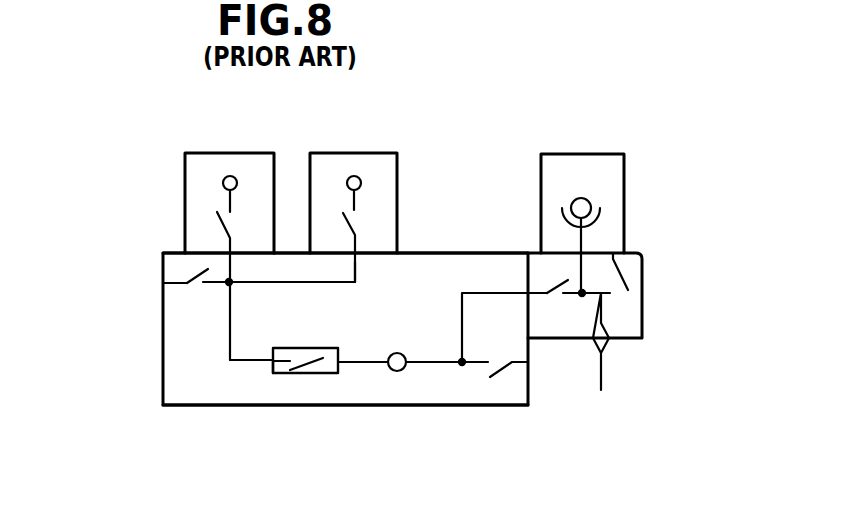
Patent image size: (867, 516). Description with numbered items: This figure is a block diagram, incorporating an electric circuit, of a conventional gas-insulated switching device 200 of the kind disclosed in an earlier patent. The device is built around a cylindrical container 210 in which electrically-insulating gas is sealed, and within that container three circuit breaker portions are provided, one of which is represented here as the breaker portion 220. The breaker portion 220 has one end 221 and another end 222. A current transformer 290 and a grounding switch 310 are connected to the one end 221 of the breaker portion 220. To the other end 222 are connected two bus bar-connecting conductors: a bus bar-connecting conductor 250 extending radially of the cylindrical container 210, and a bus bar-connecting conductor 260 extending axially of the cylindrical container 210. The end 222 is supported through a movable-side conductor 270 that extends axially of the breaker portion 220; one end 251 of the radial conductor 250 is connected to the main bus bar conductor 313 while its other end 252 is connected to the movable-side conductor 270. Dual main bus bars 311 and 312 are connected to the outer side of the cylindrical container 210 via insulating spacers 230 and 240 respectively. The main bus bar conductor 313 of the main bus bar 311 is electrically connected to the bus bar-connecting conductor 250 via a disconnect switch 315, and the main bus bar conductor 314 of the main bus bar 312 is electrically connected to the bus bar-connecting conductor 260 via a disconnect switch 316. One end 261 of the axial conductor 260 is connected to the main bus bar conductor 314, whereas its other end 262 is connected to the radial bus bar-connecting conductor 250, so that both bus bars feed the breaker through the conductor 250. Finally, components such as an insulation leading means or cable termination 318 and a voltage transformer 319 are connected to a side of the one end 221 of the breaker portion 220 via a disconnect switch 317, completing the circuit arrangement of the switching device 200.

The gas-insulated switching device 200 is at (143, 397).
The cylindrical container 210 is at (177, 407).
The circuit breaker portion 220 is at (317, 376).
The one end of the breaker portion 221 is at (337, 347).
The other end of the breaker portion 222 is at (276, 374).
The insulating spacer 230 is at (205, 249).
The insulating spacer 240 is at (375, 251).
The bus bar-connecting conductor 250 is at (227, 322).
The one end of the bus bar-connecting conductor 251 is at (227, 265).
The other end of the bus bar-connecting conductor 252 is at (227, 343).
The bus bar-connecting conductor 260 is at (292, 282).
The one end of the bus bar-connecting conductor 261 is at (352, 282).
The other end of the bus bar-connecting conductor 262 is at (232, 283).
The movable-side conductor 270 is at (262, 362).
The current transformer 290 is at (397, 372).
The grounding switch 310 is at (493, 378).
The main bus bar 311 is at (213, 152).
The main bus bar 312 is at (363, 152).
The main bus bar conductor 313 is at (232, 176).
The main bus bar conductor 314 is at (362, 180).
The disconnect switch 315 is at (218, 212).
The disconnect switch 316 is at (357, 222).
The disconnect switch 317 is at (557, 298).
The cable termination 318 is at (606, 330).
The voltage transformer 319 is at (624, 190).